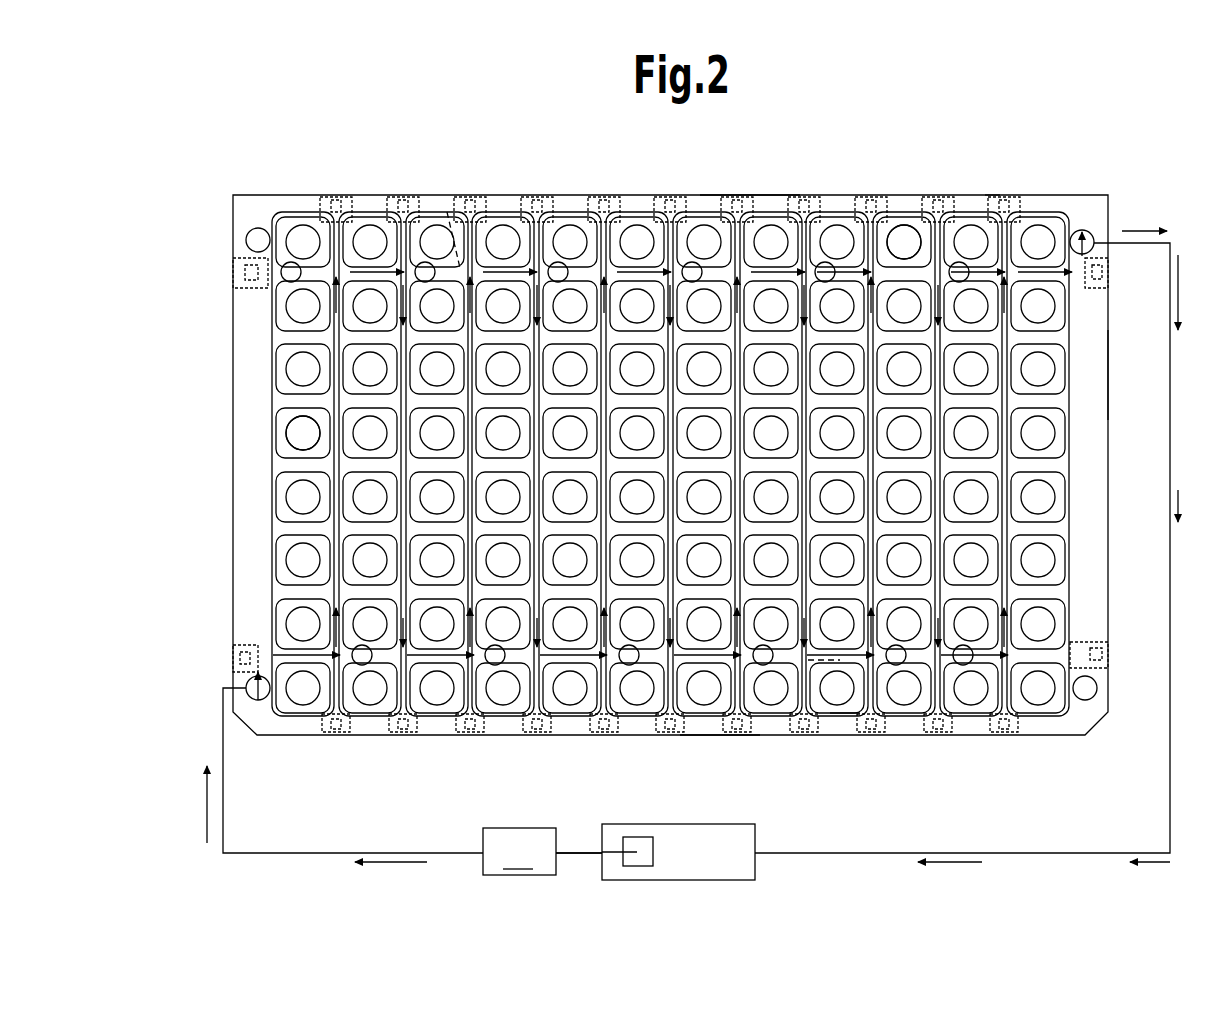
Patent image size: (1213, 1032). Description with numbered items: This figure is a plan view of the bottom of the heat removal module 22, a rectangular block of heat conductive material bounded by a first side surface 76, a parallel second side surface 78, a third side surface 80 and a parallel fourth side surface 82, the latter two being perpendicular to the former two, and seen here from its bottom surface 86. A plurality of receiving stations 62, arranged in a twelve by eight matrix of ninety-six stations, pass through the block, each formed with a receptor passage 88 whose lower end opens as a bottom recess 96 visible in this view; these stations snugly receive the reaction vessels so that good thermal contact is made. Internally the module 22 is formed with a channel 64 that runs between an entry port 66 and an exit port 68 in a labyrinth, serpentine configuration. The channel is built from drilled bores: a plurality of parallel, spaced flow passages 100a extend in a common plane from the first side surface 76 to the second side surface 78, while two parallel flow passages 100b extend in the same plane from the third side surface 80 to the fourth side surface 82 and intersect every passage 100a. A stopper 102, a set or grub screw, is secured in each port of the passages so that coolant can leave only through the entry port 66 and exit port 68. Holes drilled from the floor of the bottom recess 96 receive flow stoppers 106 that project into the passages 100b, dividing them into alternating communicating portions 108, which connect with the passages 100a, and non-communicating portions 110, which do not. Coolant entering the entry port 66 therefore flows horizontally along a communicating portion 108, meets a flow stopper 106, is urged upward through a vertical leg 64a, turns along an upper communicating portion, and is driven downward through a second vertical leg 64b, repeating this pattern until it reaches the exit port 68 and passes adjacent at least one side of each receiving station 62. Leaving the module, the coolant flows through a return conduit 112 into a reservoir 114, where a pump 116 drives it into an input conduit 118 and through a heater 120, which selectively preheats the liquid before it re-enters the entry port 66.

The heat removal module 22 is at (985, 178).
The receiving station 62 is at (833, 210).
The channel 64 is at (333, 401).
The vertical leg 64a is at (335, 428).
The second vertical leg 64b is at (400, 463).
The entry port 66 is at (250, 690).
The exit port 68 is at (1093, 243).
The first side surface 76 is at (715, 733).
The second side surface 78 is at (787, 198).
The third side surface 80 is at (1109, 362).
The fourth side surface 82 is at (232, 238).
The bottom surface 86 is at (1082, 718).
The receptor passage 88 is at (900, 243).
The bottom recess 96 is at (845, 700).
The flow passages 100a is at (335, 300).
The flow passages 100b is at (447, 210).
The stopper 102 is at (345, 210).
The flow stopper 106 is at (688, 266).
The communicating portions 108 is at (315, 655).
The non-communicating portions 110 is at (300, 215).
The return conduit 112 is at (1168, 258).
The reservoir 114 is at (747, 865).
The pump 116 is at (637, 851).
The input conduit 118 is at (567, 847).
The heater 120 is at (519, 851).